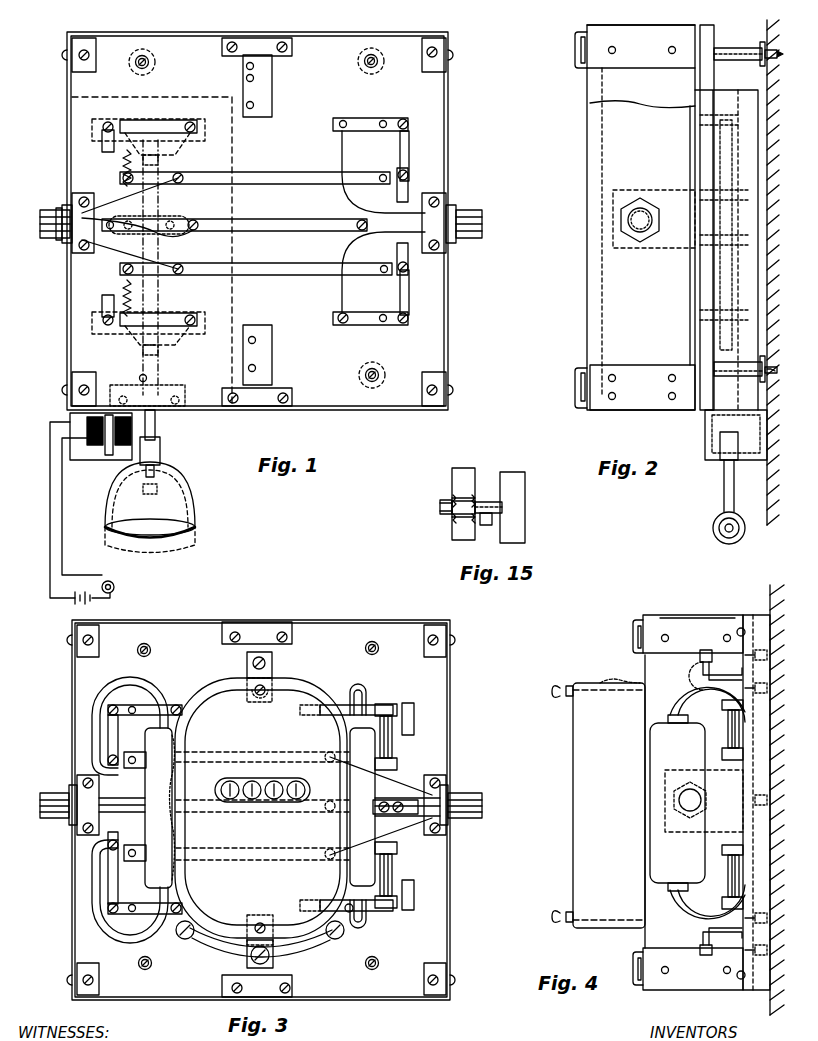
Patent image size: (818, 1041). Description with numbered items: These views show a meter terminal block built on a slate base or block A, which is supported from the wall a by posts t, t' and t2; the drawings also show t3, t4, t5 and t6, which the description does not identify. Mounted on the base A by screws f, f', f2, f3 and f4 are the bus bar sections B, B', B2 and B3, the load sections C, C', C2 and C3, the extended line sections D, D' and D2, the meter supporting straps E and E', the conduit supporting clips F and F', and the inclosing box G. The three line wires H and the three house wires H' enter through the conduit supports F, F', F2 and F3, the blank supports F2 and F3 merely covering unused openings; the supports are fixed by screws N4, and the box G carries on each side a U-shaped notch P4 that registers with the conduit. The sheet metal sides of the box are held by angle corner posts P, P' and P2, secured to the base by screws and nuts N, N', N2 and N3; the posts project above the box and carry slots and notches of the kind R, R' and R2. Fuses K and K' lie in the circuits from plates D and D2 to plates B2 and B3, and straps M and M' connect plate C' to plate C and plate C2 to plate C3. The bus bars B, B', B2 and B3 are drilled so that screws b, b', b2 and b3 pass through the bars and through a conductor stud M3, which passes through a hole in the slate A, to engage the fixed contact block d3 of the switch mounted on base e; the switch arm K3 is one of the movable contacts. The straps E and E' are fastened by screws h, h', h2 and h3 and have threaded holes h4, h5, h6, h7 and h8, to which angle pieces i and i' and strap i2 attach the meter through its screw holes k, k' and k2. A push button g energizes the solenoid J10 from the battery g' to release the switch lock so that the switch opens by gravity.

In FIG. 1, the terminal base or block A is at (257, 221).
In FIG. 2, the terminal base or block A is at (712, 28).
In FIG. 15, the terminal base or block A is at (462, 468).
In FIG. 3, the terminal base or block A is at (261, 810).
In FIG. 4, the terminal base or block A is at (760, 614).
In FIG. 1, the angle corner post P is at (439, 216).
In FIG. 1, the angle corner post P' is at (79, 39).
In FIG. 1, the angle corner post P2 is at (82, 398).
In FIG. 2, the U-shaped opening P4 is at (672, 212).
In FIG. 1, the screw and nut N is at (457, 65).
In FIG. 1, the screw and nut N' is at (461, 379).
In FIG. 1, the screw and nut N2 is at (88, 52).
In FIG. 4, the screw and nut N2 is at (745, 632).
In FIG. 1, the screw and nut N3 is at (82, 390).
In FIG. 4, the screw and nut N3 is at (745, 975).
In FIG. 1, the screw N4 is at (232, 42).
In FIG. 1, the conduit supporting clip F is at (448, 224).
In FIG. 3, the conduit supporting clip F is at (94, 817).
In FIG. 1, the conduit supporting clip F' is at (67, 234).
In FIG. 3, the conduit supporting clip F' is at (405, 805).
In FIG. 1, the blank conduit support F2 is at (258, 44).
In FIG. 3, the blank conduit support F2 is at (278, 994).
In FIG. 1, the blank conduit support F3 is at (262, 403).
In FIG. 3, the blank conduit support F3 is at (250, 632).
In FIG. 1, the meter supporting strap E is at (266, 86).
In FIG. 3, the meter supporting strap E is at (243, 676).
In FIG. 1, the meter supporting strap E' is at (269, 355).
In FIG. 3, the meter supporting strap E' is at (242, 945).
In FIG. 4, the screw h is at (776, 661).
In FIG. 4, the screw h' is at (778, 693).
In FIG. 4, the screw h2 is at (768, 918).
In FIG. 4, the screw h3 is at (768, 950).
In FIG. 1, the threaded hole h4 is at (254, 66).
In FIG. 1, the threaded hole h5 is at (254, 78).
In FIG. 1, the threaded hole h6 is at (254, 105).
In FIG. 1, the threaded hole h7 is at (256, 340).
In FIG. 1, the threaded hole h8 is at (256, 368).
In FIG. 1, the post t is at (378, 55).
In FIG. 2, the post t is at (745, 41).
In FIG. 1, the post t' is at (383, 372).
In FIG. 2, the post t' is at (753, 354).
In FIG. 1, the post t2 is at (152, 58).
In FIG. 1, the screw t3 is at (366, 374).
In FIG. 2, the screw t3 is at (777, 371).
In FIG. 3, the screw t3 is at (150, 647).
In FIG. 3, the screw t4 is at (378, 645).
In FIG. 1, the screw t5 is at (366, 60).
In FIG. 2, the screw t5 is at (780, 50).
In FIG. 3, the screw t5 is at (138, 963).
In FIG. 1, the screw t6 is at (136, 60).
In FIG. 3, the screw t6 is at (379, 963).
In FIG. 1, the bus bar section B is at (148, 132).
In FIG. 3, the bus bar section B is at (415, 896).
In FIG. 1, the bus bar section B' is at (102, 296).
In FIG. 3, the bus bar section B' is at (420, 718).
In FIG. 1, the bus bar section B2 is at (190, 125).
In FIG. 3, the bus bar section B2 is at (322, 900).
In FIG. 1, the bus bar section B3 is at (172, 318).
In FIG. 15, the bus bar section B3 is at (455, 517).
In FIG. 3, the bus bar section B3 is at (320, 707).
In FIG. 1, the screw b is at (99, 143).
In FIG. 1, the screw b' is at (102, 334).
In FIG. 1, the screw b2 is at (192, 134).
In FIG. 1, the screw b3 is at (192, 328).
In FIG. 15, the screw b3 is at (444, 503).
In FIG. 1, the fuse K is at (114, 168).
In FIG. 3, the fuse K is at (397, 875).
In FIG. 1, the fuse K' is at (115, 283).
In FIG. 3, the fuse K' is at (397, 737).
In FIG. 15, the switch arm K3 is at (486, 526).
In FIG. 1, the bus bar section D is at (236, 181).
In FIG. 3, the bus bar section D is at (263, 846).
In FIG. 1, the bus bar section D' is at (224, 218).
In FIG. 3, the bus bar section D' is at (263, 795).
In FIG. 1, the bus bar section D2 is at (297, 265).
In FIG. 3, the bus bar section D2 is at (214, 760).
In FIG. 1, the bus bar section C is at (379, 154).
In FIG. 3, the bus bar section C is at (145, 918).
In FIG. 1, the bus bar section C' is at (415, 183).
In FIG. 3, the bus bar section C' is at (130, 883).
In FIG. 1, the bus bar section C2 is at (408, 258).
In FIG. 3, the bus bar section C2 is at (118, 766).
In FIG. 1, the bus bar section C3 is at (368, 322).
In FIG. 3, the bus bar section C3 is at (140, 708).
In FIG. 1, the strap M is at (418, 156).
In FIG. 1, the strap M' is at (417, 292).
In FIG. 15, the conductor stud M3 is at (460, 530).
In FIG. 1, the line wires H is at (36, 224).
In FIG. 3, the line wires H is at (478, 805).
In FIG. 1, the house wires H' is at (484, 224).
In FIG. 3, the house wires H' is at (36, 805).
In FIG. 1, the inclosing box G is at (448, 290).
In FIG. 2, the inclosing box G is at (641, 217).
In FIG. 3, the inclosing box G is at (75, 712).
In FIG. 1, the push button g is at (95, 513).
In FIG. 2, the push button g is at (620, 173).
In FIG. 1, the battery g' is at (51, 612).
In FIG. 1, the switch base e is at (232, 306).
In FIG. 15, the switch base e is at (510, 472).
In FIG. 15, the fixed contact block d3 is at (484, 502).
In FIG. 1, the solenoid J10 is at (132, 427).
In FIG. 2, the slot R is at (566, 55).
In FIG. 4, the slot R is at (619, 820).
In FIG. 2, the slot R' is at (581, 400).
In FIG. 2, the notch R2 is at (578, 380).
In FIG. 2, the wall a is at (779, 272).
In FIG. 4, the wall a is at (782, 800).
In FIG. 4, the angle piece i is at (707, 653).
In FIG. 4, the angle piece i' is at (707, 949).
In FIG. 3, the strap i2 is at (340, 945).
In FIG. 3, the screw hole k is at (357, 937).
In FIG. 3, the screw hole k' is at (185, 948).
In FIG. 3, the screw hole k2 is at (266, 663).
In FIG. 4, the screw f is at (763, 724).
In FIG. 4, the screw f' is at (764, 748).
In FIG. 4, the screw f2 is at (760, 806).
In FIG. 4, the screw f3 is at (755, 880).
In FIG. 4, the screw f4 is at (755, 898).